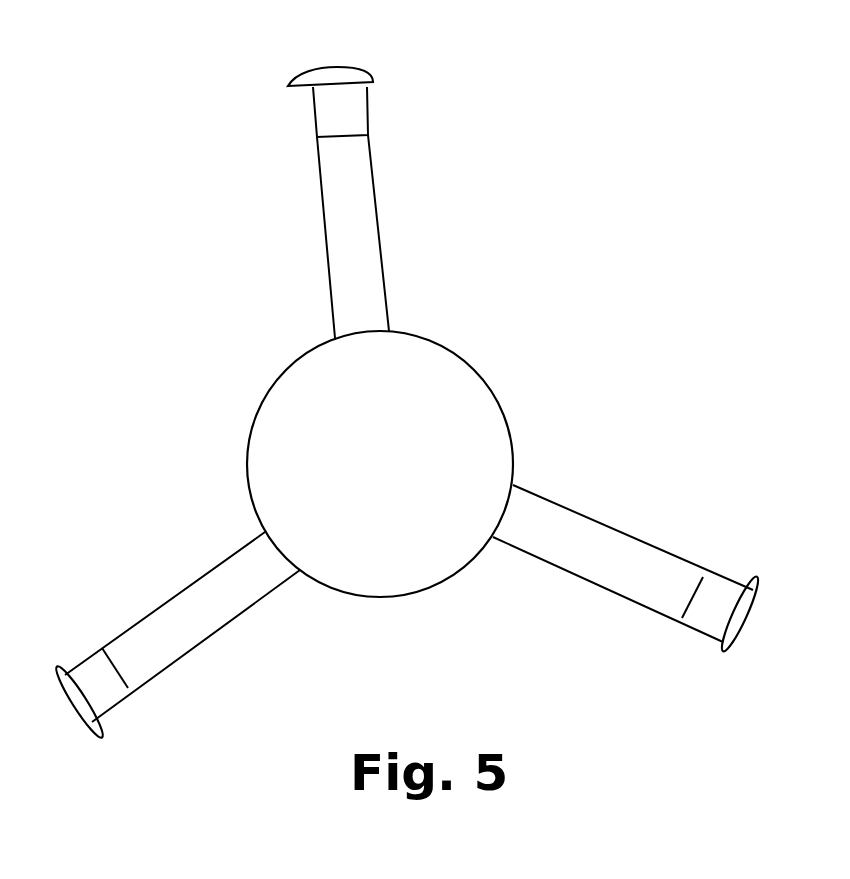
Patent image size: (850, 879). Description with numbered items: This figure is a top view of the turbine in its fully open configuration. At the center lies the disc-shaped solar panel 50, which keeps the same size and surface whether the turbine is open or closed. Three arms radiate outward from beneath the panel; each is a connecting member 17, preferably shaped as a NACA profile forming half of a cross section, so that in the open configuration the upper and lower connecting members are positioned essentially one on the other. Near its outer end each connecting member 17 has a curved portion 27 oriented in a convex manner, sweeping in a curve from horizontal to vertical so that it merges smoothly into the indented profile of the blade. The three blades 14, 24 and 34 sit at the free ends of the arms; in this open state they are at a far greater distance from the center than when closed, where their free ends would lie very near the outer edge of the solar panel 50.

The disc-shaped solar panel 50 is at (398, 453).
The connecting member 17 is at (368, 248).
The curved portion 27 is at (350, 110).
The blade 24 is at (333, 73).
The blade 14 is at (57, 672).
The blade 34 is at (753, 637).